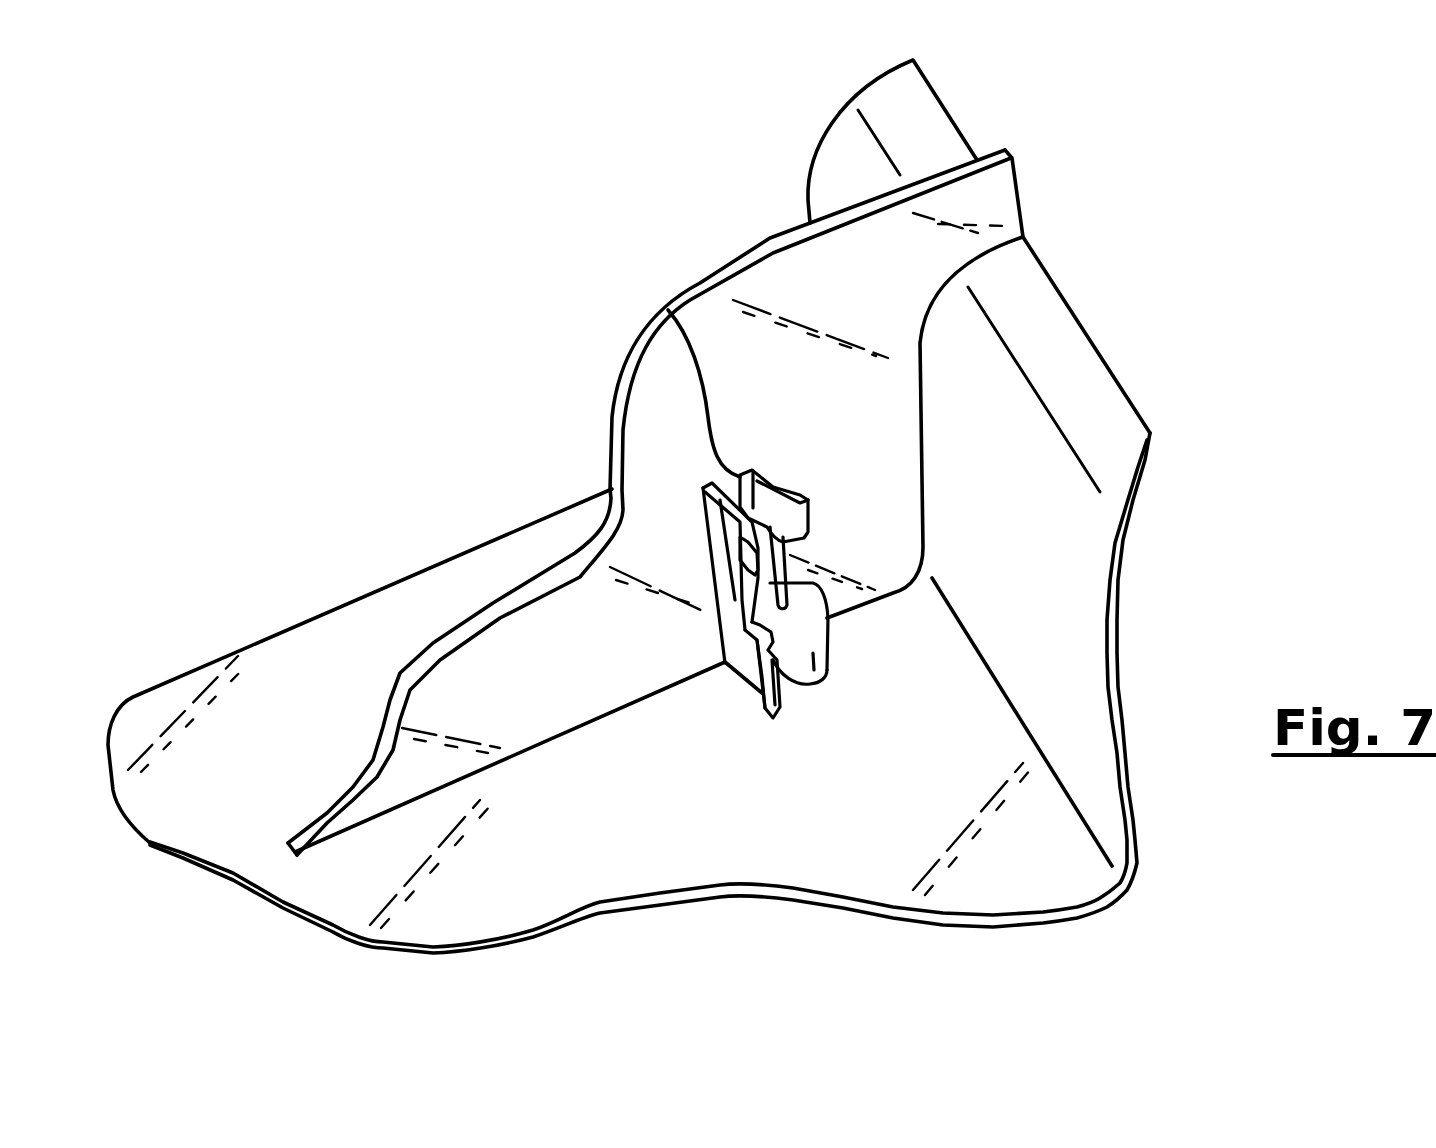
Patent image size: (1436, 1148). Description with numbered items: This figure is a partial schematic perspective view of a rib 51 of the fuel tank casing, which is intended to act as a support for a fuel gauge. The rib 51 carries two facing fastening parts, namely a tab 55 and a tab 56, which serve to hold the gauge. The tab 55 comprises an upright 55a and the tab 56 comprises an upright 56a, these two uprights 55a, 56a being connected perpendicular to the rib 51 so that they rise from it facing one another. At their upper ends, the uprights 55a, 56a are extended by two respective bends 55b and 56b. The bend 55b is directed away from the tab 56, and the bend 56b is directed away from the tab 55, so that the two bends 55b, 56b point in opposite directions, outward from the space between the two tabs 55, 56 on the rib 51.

The rib 51 is at (797, 285).
The tab 56 is at (668, 310).
The upright 56a is at (830, 616).
The bend 56b is at (805, 522).
The tab 55 is at (727, 633).
The upright 55a is at (740, 523).
The bend 55b is at (723, 568).